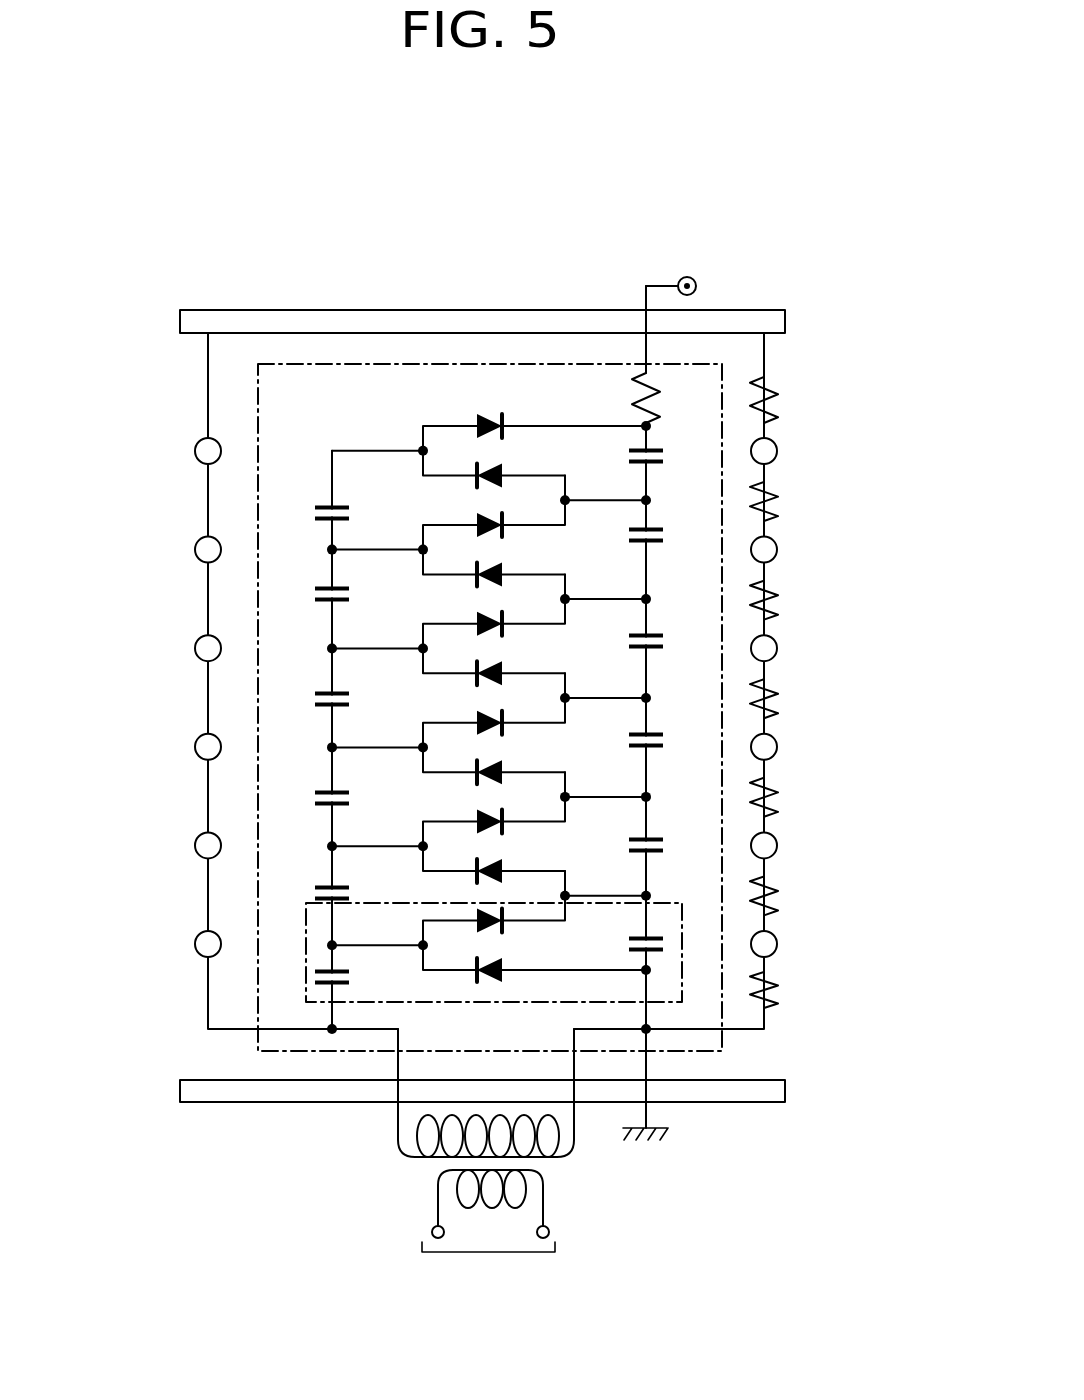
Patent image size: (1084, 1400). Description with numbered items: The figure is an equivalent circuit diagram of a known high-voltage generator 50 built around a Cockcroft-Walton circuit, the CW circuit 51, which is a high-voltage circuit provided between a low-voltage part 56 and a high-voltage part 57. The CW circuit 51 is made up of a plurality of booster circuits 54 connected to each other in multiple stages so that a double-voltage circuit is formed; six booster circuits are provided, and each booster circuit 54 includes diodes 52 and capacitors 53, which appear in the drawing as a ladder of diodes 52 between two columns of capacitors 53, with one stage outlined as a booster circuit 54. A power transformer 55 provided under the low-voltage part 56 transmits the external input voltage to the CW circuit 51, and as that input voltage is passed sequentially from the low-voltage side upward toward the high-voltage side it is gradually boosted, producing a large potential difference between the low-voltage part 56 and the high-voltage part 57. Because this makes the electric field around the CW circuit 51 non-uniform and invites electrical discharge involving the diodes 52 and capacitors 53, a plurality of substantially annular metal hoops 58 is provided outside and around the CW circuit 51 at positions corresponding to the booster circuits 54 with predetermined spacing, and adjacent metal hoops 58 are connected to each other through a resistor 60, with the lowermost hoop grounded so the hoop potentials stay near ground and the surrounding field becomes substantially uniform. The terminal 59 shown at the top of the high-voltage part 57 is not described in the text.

The high-voltage generator 50 is at (515, 270).
The CW circuit 51 is at (287, 406).
The diode 52 is at (487, 930).
The capacitor 53 is at (350, 972).
The booster circuit 54 is at (366, 903).
The power transformer 55 is at (572, 1190).
The low-voltage part 56 is at (772, 1104).
The high-voltage part 57 is at (393, 310).
The metal hoop 58 is at (195, 451).
The high voltage output terminal 59 is at (687, 277).
The resistor 60 is at (660, 392).